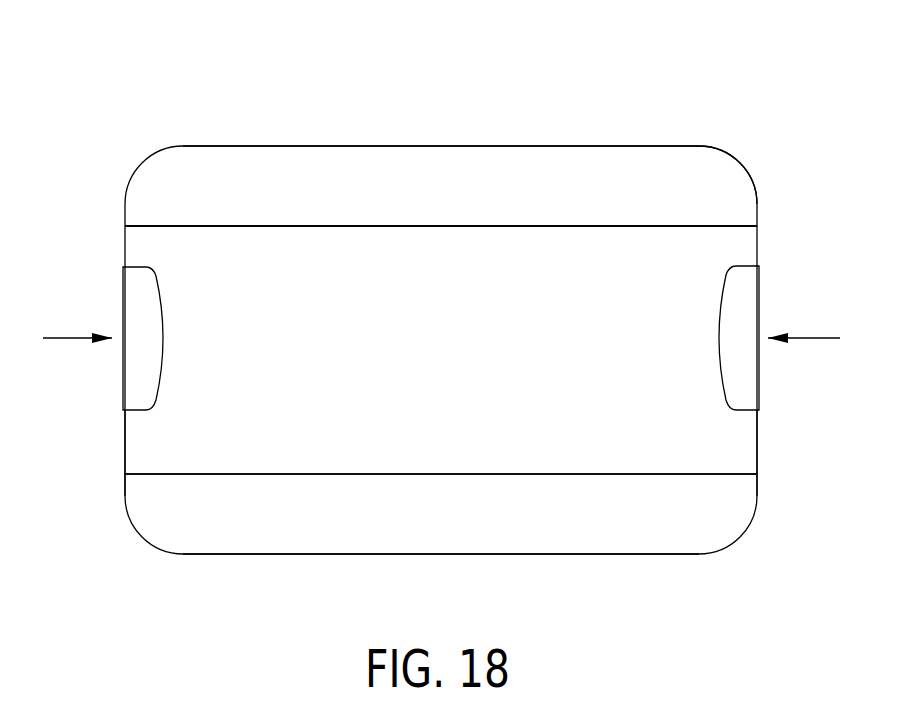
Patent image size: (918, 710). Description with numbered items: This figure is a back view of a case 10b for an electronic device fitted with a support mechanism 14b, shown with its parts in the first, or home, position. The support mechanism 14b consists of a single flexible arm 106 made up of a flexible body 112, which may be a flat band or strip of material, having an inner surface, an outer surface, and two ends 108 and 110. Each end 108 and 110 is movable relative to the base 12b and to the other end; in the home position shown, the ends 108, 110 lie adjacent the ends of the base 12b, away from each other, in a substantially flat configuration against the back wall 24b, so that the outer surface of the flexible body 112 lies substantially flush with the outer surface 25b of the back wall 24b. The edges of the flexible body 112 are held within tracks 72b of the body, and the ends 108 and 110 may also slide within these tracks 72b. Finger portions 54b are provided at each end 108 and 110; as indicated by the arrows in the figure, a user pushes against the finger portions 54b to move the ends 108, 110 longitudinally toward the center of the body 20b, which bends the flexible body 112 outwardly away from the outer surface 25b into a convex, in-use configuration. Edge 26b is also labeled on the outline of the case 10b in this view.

The case 10b is at (168, 72).
The base 12b is at (624, 92).
The support mechanism 14b is at (256, 486).
The body 20b is at (671, 138).
The back wall 24b is at (722, 178).
The outer surface 25b is at (625, 204).
The peripheral edge 26b is at (337, 137).
The finger portion 54b is at (155, 327).
The track 72b is at (233, 226).
The flexible arm 106 is at (400, 385).
The end 108 is at (127, 450).
The end 110 is at (755, 445).
The flexible body 112 is at (413, 225).